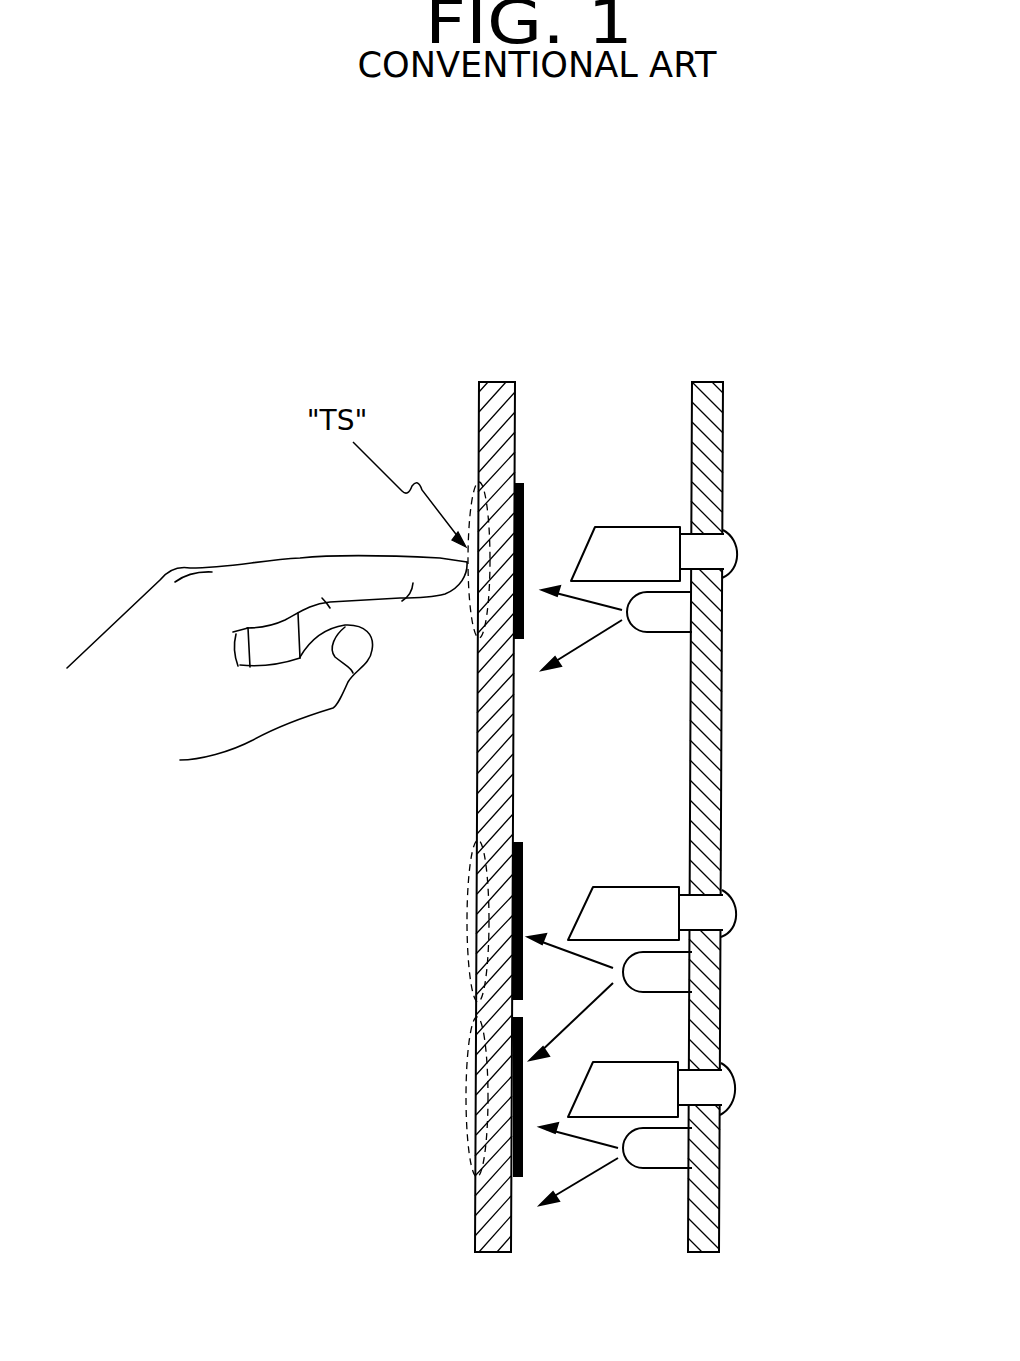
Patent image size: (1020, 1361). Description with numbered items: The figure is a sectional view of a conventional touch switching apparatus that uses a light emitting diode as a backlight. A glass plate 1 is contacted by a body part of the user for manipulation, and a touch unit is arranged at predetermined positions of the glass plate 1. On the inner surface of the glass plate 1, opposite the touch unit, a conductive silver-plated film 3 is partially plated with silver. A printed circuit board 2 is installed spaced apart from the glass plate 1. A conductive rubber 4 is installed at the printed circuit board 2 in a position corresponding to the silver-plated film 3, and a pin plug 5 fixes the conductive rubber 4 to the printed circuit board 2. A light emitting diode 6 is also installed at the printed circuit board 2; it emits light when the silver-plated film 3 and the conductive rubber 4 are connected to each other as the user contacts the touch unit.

The glass plate 1 is at (483, 1224).
The printed circuit board 2 is at (712, 465).
The conductive silver-plated film 3 is at (515, 1178).
The conductive rubber 4 is at (612, 537).
The pin plug 5 is at (685, 537).
The light emitting diode 6 is at (667, 627).